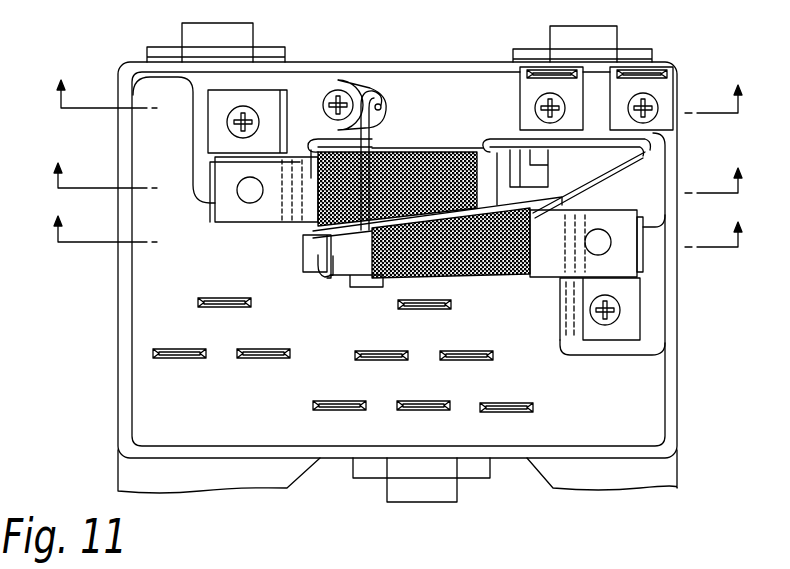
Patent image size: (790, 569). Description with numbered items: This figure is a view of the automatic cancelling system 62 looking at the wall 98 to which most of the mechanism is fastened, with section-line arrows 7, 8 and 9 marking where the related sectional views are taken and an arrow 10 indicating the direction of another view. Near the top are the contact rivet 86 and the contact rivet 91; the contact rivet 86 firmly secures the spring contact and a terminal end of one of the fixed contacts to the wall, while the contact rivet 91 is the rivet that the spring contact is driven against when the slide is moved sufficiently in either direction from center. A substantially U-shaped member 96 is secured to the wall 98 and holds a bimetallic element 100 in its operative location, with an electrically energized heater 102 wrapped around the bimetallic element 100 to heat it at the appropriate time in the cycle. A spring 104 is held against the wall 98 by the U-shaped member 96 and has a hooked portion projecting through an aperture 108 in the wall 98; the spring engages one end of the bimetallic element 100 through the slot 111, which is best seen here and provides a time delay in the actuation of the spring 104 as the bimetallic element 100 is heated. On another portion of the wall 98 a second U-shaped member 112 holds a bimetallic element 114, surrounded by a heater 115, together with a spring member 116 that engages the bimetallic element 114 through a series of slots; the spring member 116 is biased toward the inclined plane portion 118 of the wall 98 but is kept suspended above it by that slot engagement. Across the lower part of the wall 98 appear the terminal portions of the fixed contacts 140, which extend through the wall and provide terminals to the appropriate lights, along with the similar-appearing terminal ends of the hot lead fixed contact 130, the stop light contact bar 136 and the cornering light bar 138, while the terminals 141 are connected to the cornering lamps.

The section line 7- 7 is at (403, 104).
The section line 8- 8 is at (397, 186).
The section line 9- 9 is at (398, 238).
The viewing direction arrow 10 is at (264, 255).
The automatic cancelling system 62 is at (118, 395).
The contact rivet 86 is at (540, 102).
The contact rivet 91 is at (346, 100).
The U-shaped member 96 is at (632, 292).
The wall 98 is at (157, 326).
The bimetallic element 100 is at (548, 260).
The heater 102 is at (503, 265).
The spring 104 is at (320, 280).
The aperture 108 is at (350, 282).
The slot 111 is at (313, 278).
The U-shaped member 112 is at (213, 128).
The bimetallic element 114 is at (225, 210).
The heater 115 is at (432, 163).
The spring member 116 is at (550, 194).
The inclined plane portion 118 is at (465, 153).
The fixed contact 130 is at (427, 410).
The stop light contact bar 136 is at (420, 309).
The cornering light bar 138 is at (215, 302).
The fixed contacts 140 is at (363, 402).
The terminals 141 is at (190, 358).